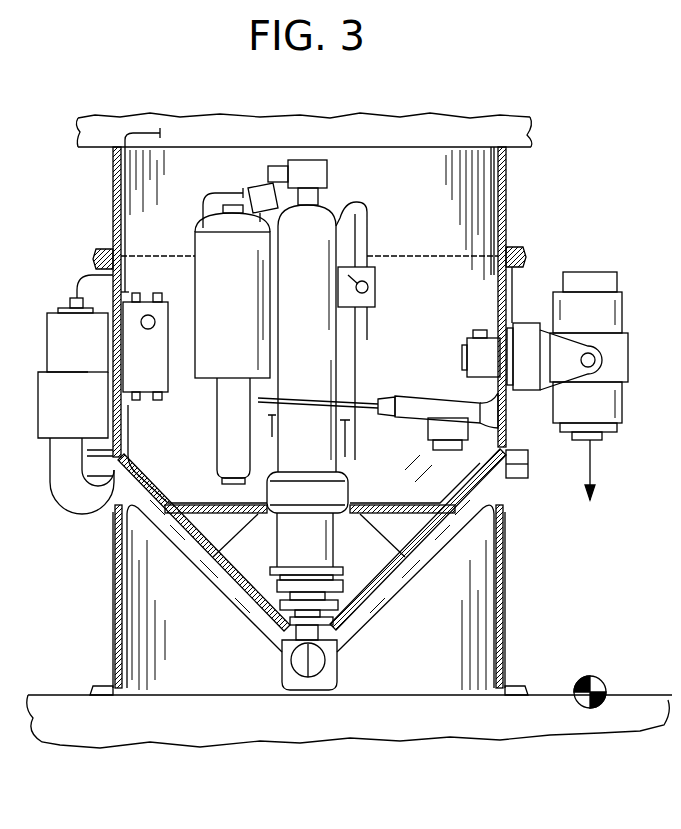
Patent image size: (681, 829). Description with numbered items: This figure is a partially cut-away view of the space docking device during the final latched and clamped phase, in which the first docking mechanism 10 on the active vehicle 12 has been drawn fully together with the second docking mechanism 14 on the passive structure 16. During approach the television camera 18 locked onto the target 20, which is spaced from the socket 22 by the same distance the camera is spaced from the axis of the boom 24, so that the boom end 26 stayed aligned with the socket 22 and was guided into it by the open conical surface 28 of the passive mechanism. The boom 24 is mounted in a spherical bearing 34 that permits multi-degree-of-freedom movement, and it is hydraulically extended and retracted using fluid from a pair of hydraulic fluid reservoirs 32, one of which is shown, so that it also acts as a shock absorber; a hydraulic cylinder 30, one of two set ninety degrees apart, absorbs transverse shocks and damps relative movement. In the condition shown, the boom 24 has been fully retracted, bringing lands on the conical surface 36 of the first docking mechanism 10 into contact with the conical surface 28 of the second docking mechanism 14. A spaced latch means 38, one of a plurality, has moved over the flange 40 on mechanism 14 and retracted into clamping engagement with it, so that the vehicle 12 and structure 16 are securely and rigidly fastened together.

The first docking mechanism 10 is at (506, 223).
The active vehicle 12 is at (529, 148).
The second docking mechanism 14 is at (109, 575).
The passive structure 16 is at (38, 695).
The television camera 18 is at (622, 312).
The target 20 is at (601, 679).
The socket 22 is at (288, 672).
The boom 24 is at (276, 548).
The boom end 26 is at (338, 669).
The conical surface 28 is at (403, 566).
The hydraulic cylinder 30 is at (415, 398).
The hydraulic fluid reservoir 32 is at (197, 265).
The spherical bearing 34 is at (358, 489).
The conical surface 36 is at (425, 550).
The latch means 38 is at (57, 477).
The flange 40 is at (516, 483).